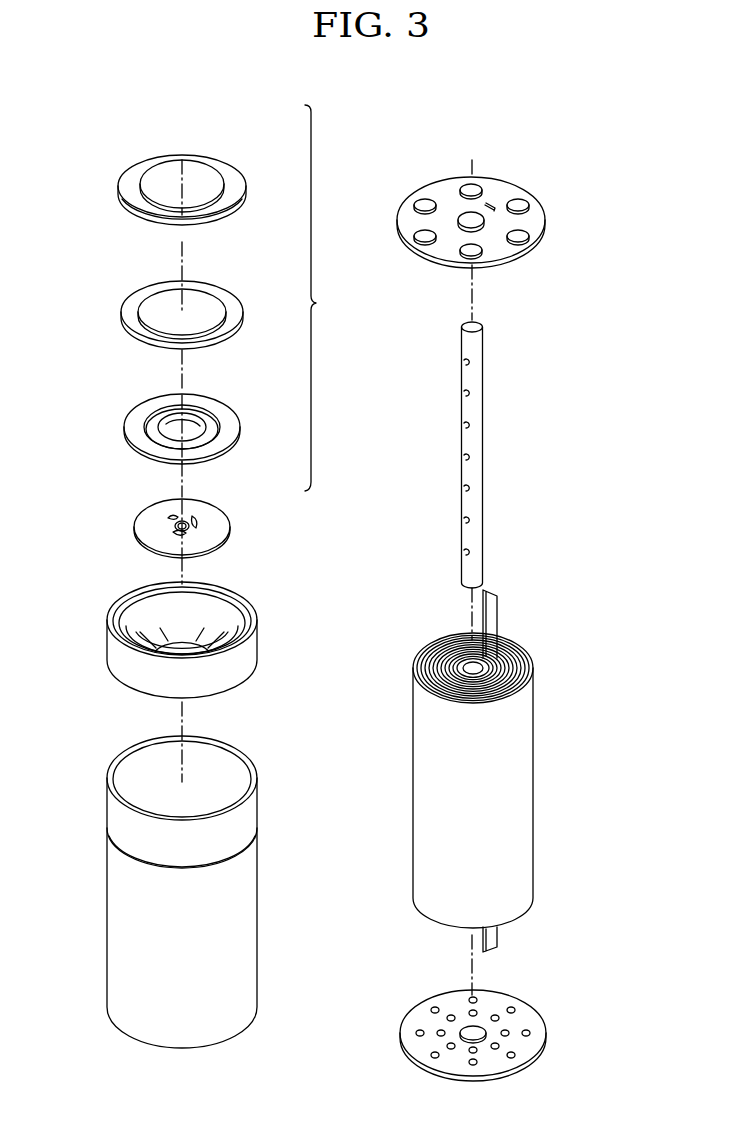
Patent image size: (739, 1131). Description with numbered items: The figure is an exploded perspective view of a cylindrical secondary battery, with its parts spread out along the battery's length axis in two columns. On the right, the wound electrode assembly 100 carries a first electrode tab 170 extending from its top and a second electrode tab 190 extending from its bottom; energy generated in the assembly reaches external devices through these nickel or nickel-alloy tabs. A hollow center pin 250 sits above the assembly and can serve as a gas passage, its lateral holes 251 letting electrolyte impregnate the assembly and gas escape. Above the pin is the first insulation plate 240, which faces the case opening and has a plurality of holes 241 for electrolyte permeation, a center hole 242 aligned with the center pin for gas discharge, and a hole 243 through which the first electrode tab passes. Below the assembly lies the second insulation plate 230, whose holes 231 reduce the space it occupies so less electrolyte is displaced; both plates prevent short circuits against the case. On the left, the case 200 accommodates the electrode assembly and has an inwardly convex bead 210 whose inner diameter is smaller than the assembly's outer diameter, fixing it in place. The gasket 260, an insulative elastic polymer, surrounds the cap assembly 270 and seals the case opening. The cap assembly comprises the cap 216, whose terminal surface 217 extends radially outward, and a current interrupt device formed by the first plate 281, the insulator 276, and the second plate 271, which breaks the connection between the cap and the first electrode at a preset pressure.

The electrode assembly 100 is at (538, 778).
The first electrode tab 170 is at (493, 617).
The second electrode tab 190 is at (497, 933).
The case 200 is at (253, 930).
The bead 210 is at (257, 832).
The cap 216 is at (233, 157).
The terminal surface 217 is at (178, 181).
The second insulation plate 230 is at (525, 1017).
The holes 231 is at (513, 1053).
The first insulation plate 240 is at (538, 218).
The holes 241 is at (522, 203).
The hole 242 is at (466, 212).
The hole 243 is at (495, 205).
The center pin 250 is at (478, 442).
The holes 251 is at (465, 392).
The gasket 260 is at (253, 652).
The cap assembly 270 is at (328, 298).
The second plate 271 is at (233, 507).
The insulator 276 is at (233, 284).
The first plate 281 is at (233, 404).